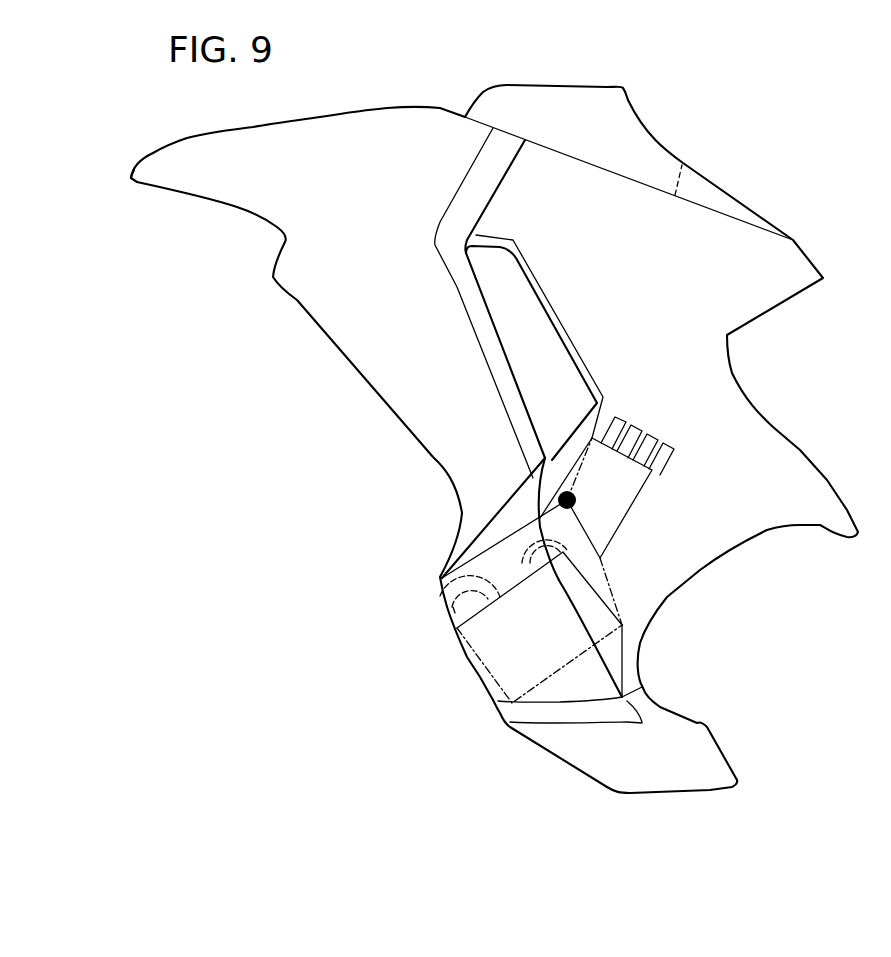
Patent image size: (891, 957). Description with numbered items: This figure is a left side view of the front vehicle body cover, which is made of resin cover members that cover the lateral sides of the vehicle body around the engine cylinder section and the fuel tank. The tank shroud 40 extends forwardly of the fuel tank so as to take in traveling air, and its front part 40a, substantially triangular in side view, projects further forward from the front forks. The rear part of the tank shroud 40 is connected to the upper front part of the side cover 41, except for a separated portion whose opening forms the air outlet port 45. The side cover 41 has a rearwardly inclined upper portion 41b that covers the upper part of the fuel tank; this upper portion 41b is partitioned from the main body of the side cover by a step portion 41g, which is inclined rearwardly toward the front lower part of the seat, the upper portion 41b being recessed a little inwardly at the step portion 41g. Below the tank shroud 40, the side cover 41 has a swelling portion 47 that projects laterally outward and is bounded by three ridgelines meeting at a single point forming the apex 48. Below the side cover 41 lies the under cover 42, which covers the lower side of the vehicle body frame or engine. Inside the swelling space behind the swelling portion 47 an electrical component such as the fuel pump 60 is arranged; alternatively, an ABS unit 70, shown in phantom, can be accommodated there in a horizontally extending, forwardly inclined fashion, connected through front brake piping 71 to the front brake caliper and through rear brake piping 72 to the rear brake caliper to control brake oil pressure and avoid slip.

The tank shroud 40 is at (343, 313).
The front part 40a is at (133, 183).
The side cover 41 is at (662, 372).
The upper portion 41b is at (585, 95).
The step portion 41g is at (683, 163).
The under cover 42 is at (513, 732).
The air outlet port 45 is at (525, 348).
The swelling portion 47 is at (605, 653).
The apex 48 is at (553, 498).
The fuel pump 60 is at (628, 493).
The ABS unit 70 is at (493, 676).
The front brake piping 71 is at (540, 540).
The rear brake piping 72 is at (440, 575).